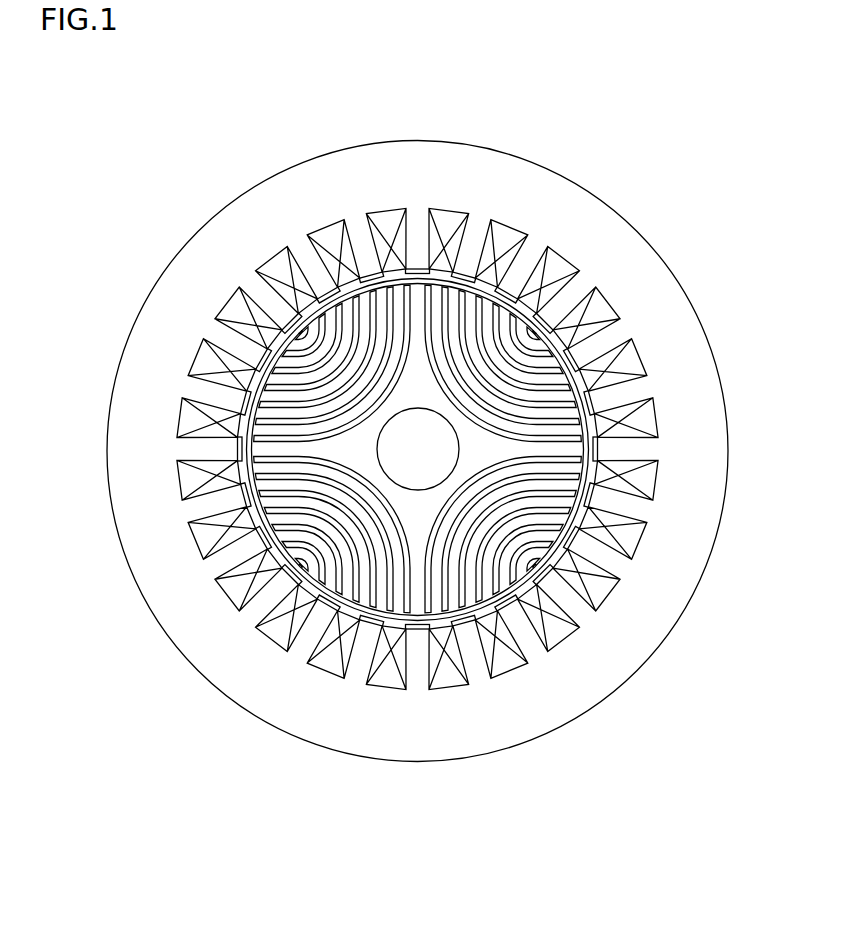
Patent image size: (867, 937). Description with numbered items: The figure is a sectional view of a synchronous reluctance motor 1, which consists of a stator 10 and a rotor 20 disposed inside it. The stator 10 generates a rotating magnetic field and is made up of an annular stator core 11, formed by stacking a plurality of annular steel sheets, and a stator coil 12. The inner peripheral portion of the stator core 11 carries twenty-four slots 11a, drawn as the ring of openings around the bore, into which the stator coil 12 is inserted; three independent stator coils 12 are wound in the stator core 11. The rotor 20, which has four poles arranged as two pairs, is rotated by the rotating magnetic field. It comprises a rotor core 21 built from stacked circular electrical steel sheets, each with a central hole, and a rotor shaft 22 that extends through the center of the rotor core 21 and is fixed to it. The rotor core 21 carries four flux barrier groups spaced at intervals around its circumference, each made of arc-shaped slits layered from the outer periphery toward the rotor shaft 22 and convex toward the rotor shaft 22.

The synchronous reluctance motor 1 is at (421, 807).
The stator 10 is at (702, 324).
The stator core 11 is at (331, 180).
The slot 11a is at (383, 222).
The stator coil 12 is at (450, 222).
The rotor 20 is at (596, 408).
The rotor core 21 is at (328, 445).
The rotor shaft 22 is at (423, 473).